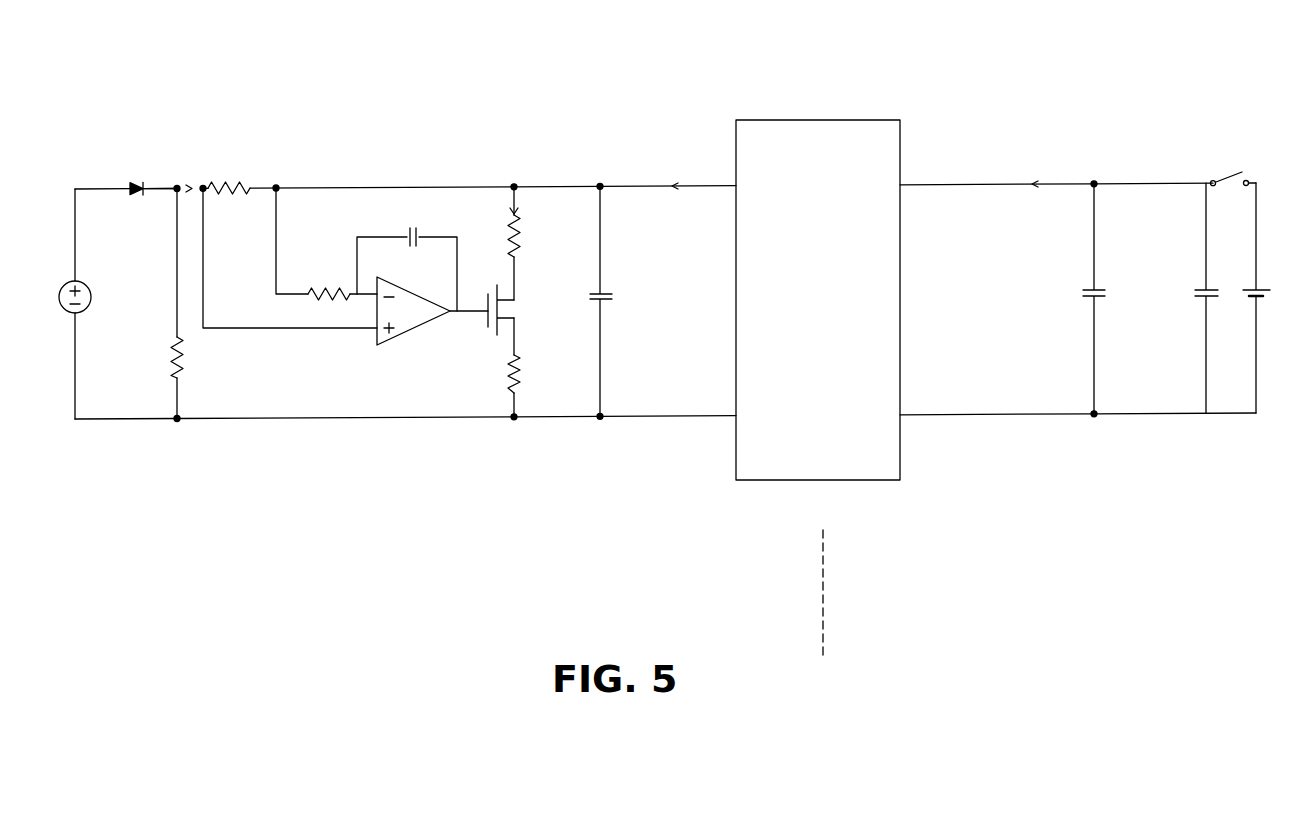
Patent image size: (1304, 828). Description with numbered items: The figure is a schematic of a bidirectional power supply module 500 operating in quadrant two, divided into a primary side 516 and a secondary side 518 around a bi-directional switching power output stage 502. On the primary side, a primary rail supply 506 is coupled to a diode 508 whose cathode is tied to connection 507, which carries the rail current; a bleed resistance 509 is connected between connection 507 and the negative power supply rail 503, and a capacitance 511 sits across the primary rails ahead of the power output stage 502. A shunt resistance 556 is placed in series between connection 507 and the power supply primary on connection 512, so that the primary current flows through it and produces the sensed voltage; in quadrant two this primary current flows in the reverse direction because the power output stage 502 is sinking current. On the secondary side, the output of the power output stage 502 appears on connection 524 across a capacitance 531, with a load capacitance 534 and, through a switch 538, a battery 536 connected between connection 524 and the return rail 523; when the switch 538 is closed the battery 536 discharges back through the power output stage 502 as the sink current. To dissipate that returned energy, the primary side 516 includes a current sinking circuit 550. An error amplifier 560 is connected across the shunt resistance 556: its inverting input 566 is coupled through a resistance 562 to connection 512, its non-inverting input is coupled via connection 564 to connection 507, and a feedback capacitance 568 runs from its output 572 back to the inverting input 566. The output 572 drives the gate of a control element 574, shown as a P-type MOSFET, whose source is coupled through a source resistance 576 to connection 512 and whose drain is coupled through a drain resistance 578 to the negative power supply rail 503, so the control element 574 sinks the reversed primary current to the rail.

The bidirectional power supply module 500 is at (142, 69).
The power output stage 502 is at (818, 300).
The negative power supply rail 503 is at (698, 420).
The primary rail supply 506 is at (58, 289).
The connection 507 is at (162, 194).
The diode 508 is at (134, 183).
The bleed resistance 509 is at (168, 357).
The input capacitor 511 is at (605, 301).
The connection (power supply primary) 512 is at (276, 210).
The primary side 516 is at (690, 542).
The secondary side 518 is at (935, 543).
The secondary return rail 523 is at (1125, 412).
The connection (output) 524 is at (1117, 182).
The capacitance 531 is at (1082, 300).
The load capacitance 534 is at (1200, 297).
The battery 536 is at (1253, 296).
The switch 538 is at (1220, 180).
The current sinking circuit 550 is at (398, 302).
The resistance (shunt resistance) 556 is at (246, 181).
The error amplifier 560 is at (390, 278).
The resistance 562 is at (341, 283).
The connection 564 is at (203, 231).
The inverting input 566 is at (370, 298).
The feedback capacitance 568 is at (408, 237).
The output 572 is at (476, 318).
The control element 574 is at (540, 313).
The source resistance 576 is at (520, 232).
The drain resistance 578 is at (505, 379).